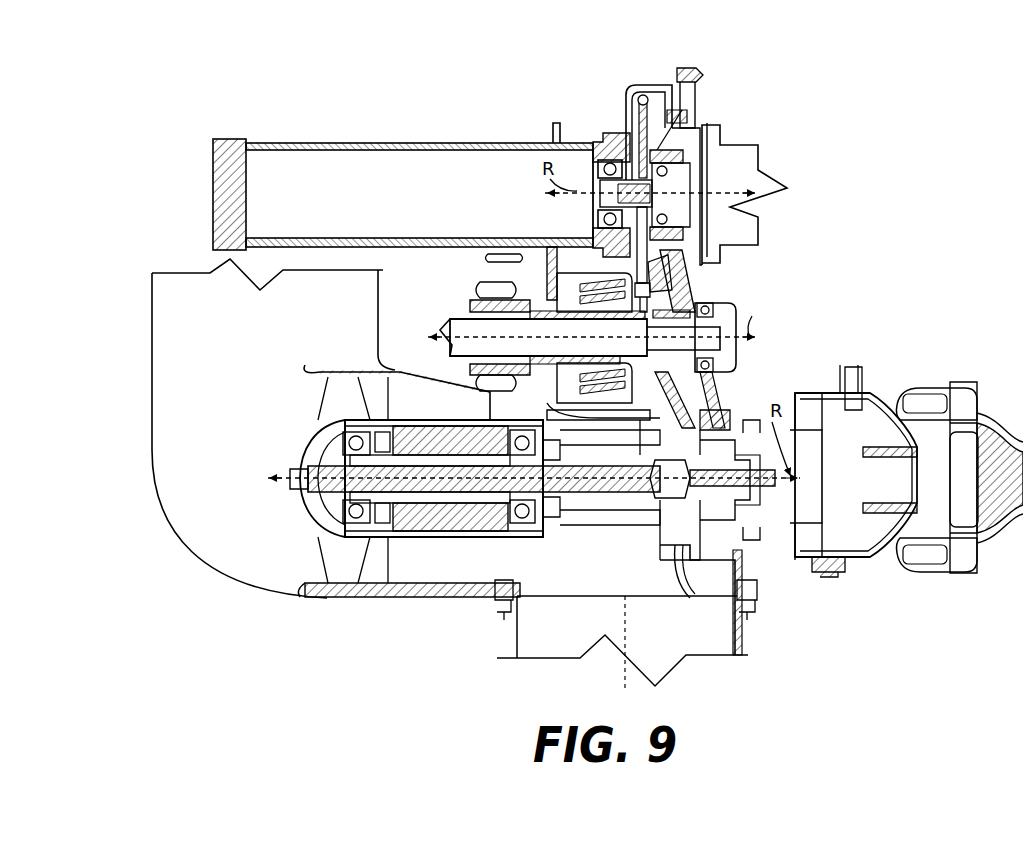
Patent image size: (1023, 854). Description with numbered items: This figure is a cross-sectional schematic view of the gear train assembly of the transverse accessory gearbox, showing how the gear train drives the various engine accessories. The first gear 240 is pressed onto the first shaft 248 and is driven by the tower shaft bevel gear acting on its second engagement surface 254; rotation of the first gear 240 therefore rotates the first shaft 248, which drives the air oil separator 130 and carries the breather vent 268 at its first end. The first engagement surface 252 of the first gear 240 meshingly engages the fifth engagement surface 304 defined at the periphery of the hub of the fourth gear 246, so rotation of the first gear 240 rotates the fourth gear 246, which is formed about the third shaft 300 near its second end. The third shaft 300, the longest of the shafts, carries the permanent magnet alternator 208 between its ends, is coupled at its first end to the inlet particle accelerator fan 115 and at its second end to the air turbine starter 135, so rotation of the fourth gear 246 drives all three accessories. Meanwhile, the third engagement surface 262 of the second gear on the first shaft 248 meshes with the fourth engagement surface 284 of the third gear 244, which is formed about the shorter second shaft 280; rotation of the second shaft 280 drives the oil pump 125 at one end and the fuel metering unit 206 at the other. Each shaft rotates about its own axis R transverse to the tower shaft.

The inlet particle accelerator fan 115 is at (328, 545).
The oil pump 125 is at (545, 143).
The air oil separator 130 is at (540, 238).
The air turbine starter 135 is at (871, 560).
The fuel metering unit 206 is at (760, 145).
The permanent magnet alternator 208 is at (442, 520).
The first gear 240 is at (690, 283).
The third gear 244 is at (660, 108).
The fourth gear 246 is at (664, 548).
The first shaft 248 is at (470, 303).
The first engagement surface 252 is at (682, 420).
The second engagement surface 254 is at (690, 398).
The third engagement surface 262 is at (700, 383).
The breather vent 268 is at (447, 320).
The second shaft 280 is at (628, 167).
The fourth engagement surface 284 is at (640, 98).
The third shaft 300 is at (600, 498).
The fifth engagement surface 304 is at (688, 600).